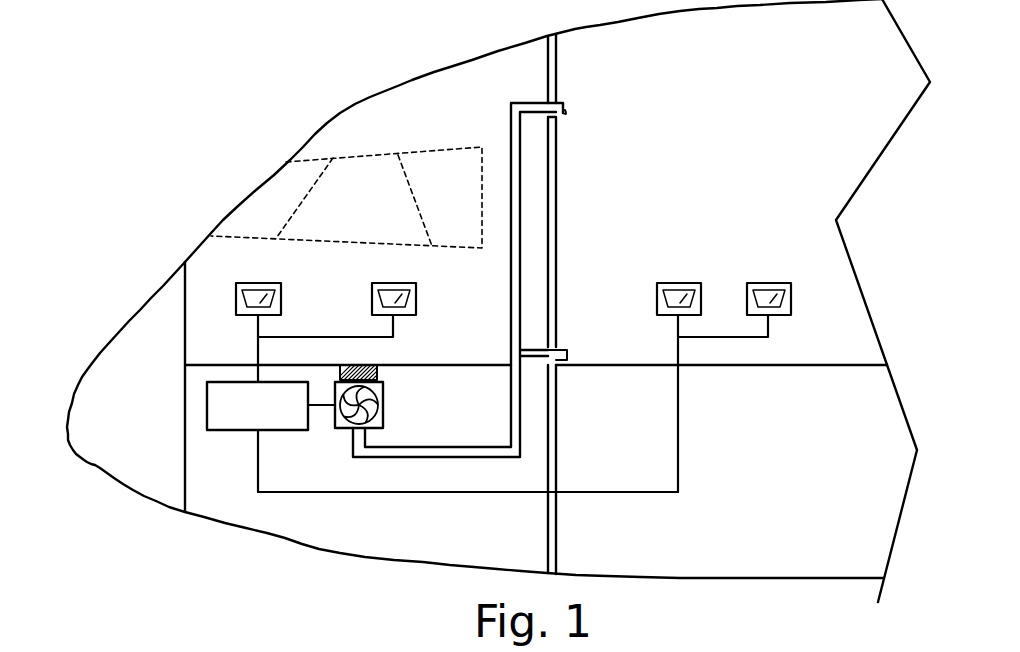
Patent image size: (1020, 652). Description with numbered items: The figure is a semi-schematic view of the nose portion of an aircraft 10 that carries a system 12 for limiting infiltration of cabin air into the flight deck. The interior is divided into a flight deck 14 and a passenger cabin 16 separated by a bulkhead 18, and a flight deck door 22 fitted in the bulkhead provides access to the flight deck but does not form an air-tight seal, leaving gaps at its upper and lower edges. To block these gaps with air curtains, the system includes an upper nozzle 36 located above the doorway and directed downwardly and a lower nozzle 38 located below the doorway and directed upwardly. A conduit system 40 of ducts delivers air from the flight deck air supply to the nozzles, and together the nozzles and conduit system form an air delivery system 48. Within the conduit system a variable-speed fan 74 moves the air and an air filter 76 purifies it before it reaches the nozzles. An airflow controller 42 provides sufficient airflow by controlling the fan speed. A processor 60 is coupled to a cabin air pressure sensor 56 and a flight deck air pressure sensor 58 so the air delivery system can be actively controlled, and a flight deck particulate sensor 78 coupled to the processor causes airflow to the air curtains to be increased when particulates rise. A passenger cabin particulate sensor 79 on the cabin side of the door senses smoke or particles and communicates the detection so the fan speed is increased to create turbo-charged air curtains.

The aircraft 10 is at (218, 50).
The system for limiting infiltration of cabin air into the flight deck 12 is at (193, 211).
The flight deck 14 is at (460, 349).
The passenger cabin 16 is at (805, 349).
The bulkhead 18 is at (557, 75).
The flight deck door 22 is at (557, 172).
The upper nozzle 36 is at (565, 108).
The lower nozzle 38 is at (568, 352).
The conduit system 40 is at (509, 135).
The airflow controller 42 is at (238, 432).
The air delivery system 48 is at (437, 508).
The cabin air pressure sensor 56 is at (686, 282).
The flight deck air pressure sensor 58 is at (258, 283).
The processor 60 is at (243, 420).
The variable-speed fan 74 is at (383, 418).
The air filter 76 is at (342, 366).
The flight deck particulate sensor 78 is at (416, 297).
The passenger cabin particulate sensor 79 is at (791, 297).